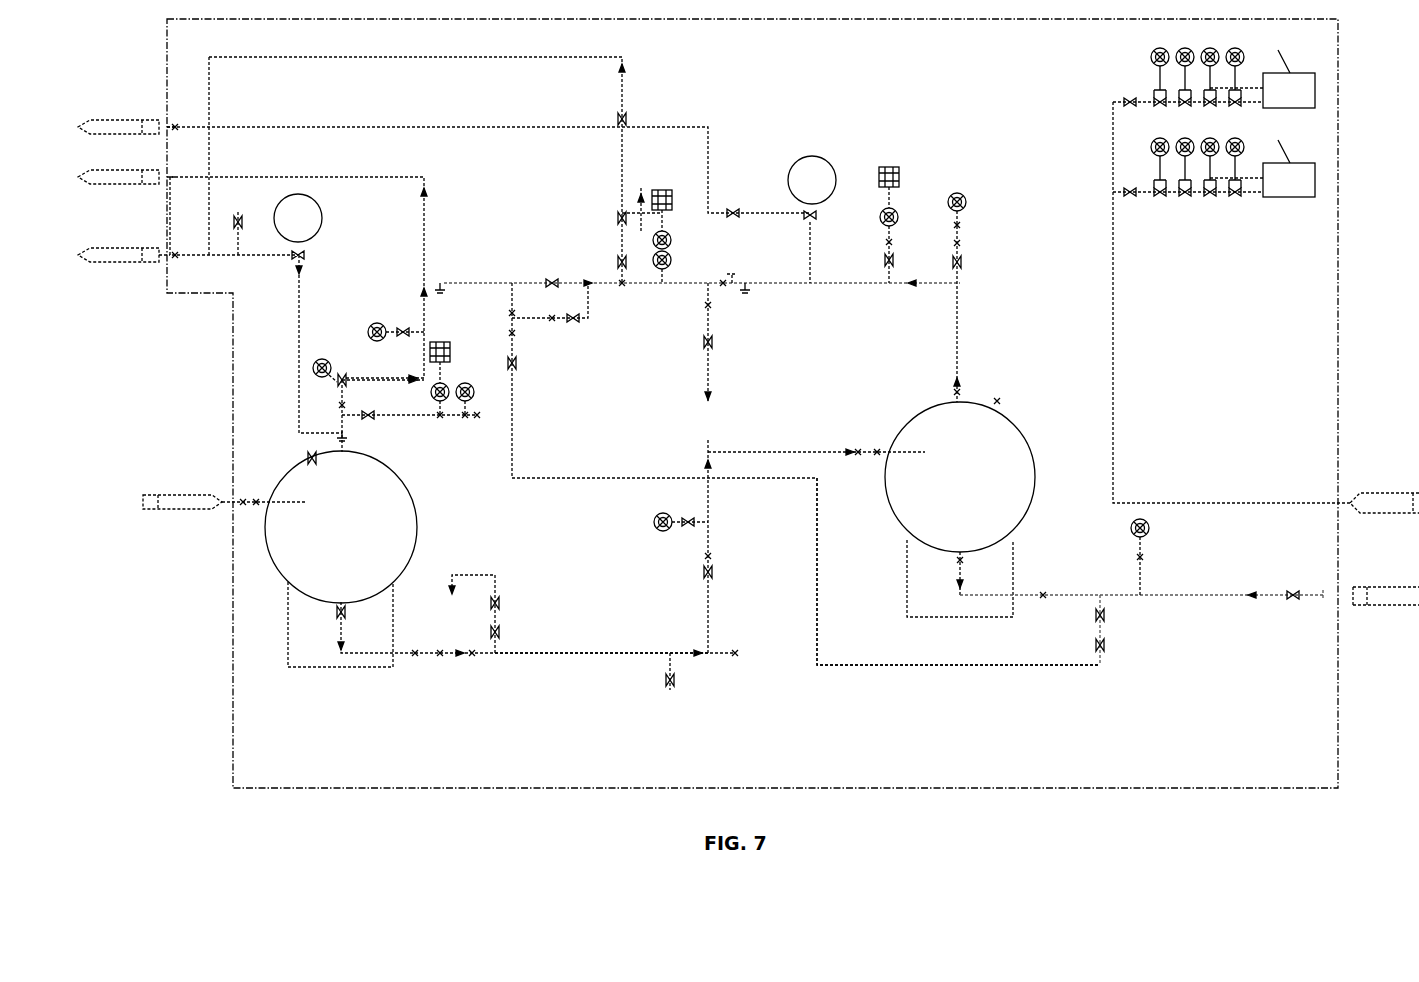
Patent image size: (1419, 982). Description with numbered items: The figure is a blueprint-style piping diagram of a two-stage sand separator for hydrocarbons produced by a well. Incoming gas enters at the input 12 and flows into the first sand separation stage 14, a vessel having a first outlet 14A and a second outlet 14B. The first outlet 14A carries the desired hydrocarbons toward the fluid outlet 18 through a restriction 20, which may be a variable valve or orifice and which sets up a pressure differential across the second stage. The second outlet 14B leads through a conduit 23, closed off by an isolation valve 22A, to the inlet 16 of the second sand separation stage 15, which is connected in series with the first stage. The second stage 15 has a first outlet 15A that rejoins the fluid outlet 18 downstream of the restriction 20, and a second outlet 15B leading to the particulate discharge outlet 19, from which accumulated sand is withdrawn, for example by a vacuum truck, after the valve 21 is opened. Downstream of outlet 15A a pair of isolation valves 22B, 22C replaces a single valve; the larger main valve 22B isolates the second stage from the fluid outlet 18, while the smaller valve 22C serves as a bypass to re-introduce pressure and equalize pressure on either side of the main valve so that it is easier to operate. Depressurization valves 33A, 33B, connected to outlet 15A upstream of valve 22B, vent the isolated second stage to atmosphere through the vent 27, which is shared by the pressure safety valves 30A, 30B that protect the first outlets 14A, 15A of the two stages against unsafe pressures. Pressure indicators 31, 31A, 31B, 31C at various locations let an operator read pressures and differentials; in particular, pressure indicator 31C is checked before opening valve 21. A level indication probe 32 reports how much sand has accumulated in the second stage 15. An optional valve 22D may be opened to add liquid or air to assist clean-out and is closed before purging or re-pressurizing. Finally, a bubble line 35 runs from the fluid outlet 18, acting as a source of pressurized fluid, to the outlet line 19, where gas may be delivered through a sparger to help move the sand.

The input 12 is at (240, 500).
The first sand separation stage 14 is at (418, 535).
The first outlet of first sand separation stage 14A is at (340, 452).
The second outlet of first sand separation stage 14B is at (338, 590).
The second sand separation stage 15 is at (898, 517).
The first outlet of second sand separation stage 15A is at (950, 408).
The second outlet of second sand separation stage 15B is at (960, 545).
The inlet of second sand separation stage 16 is at (878, 451).
The fluid outlet 18 is at (190, 177).
The particulate discharge outlet 19 is at (1078, 597).
The restriction 20 is at (342, 376).
The valve 21 is at (1293, 590).
The isolation valve 22A is at (716, 568).
The isolation valve 22B is at (548, 282).
The isolation valve 22C is at (572, 322).
The optional valve 22D is at (962, 264).
The conduit 23 is at (597, 652).
The vent 27 is at (134, 262).
The pressure safety valve 30A is at (322, 210).
The pressure safety valve 30B is at (815, 157).
The pressure indicator 31 is at (376, 322).
The pressure indicator 31A is at (640, 518).
The pressure indicator 31B is at (962, 197).
The pressure indicator 31C is at (1128, 533).
The level indication probe 32 is at (998, 400).
The depressurization valve 33A is at (618, 258).
The depressurization valve 33B is at (616, 220).
The bubble line 35 is at (930, 667).